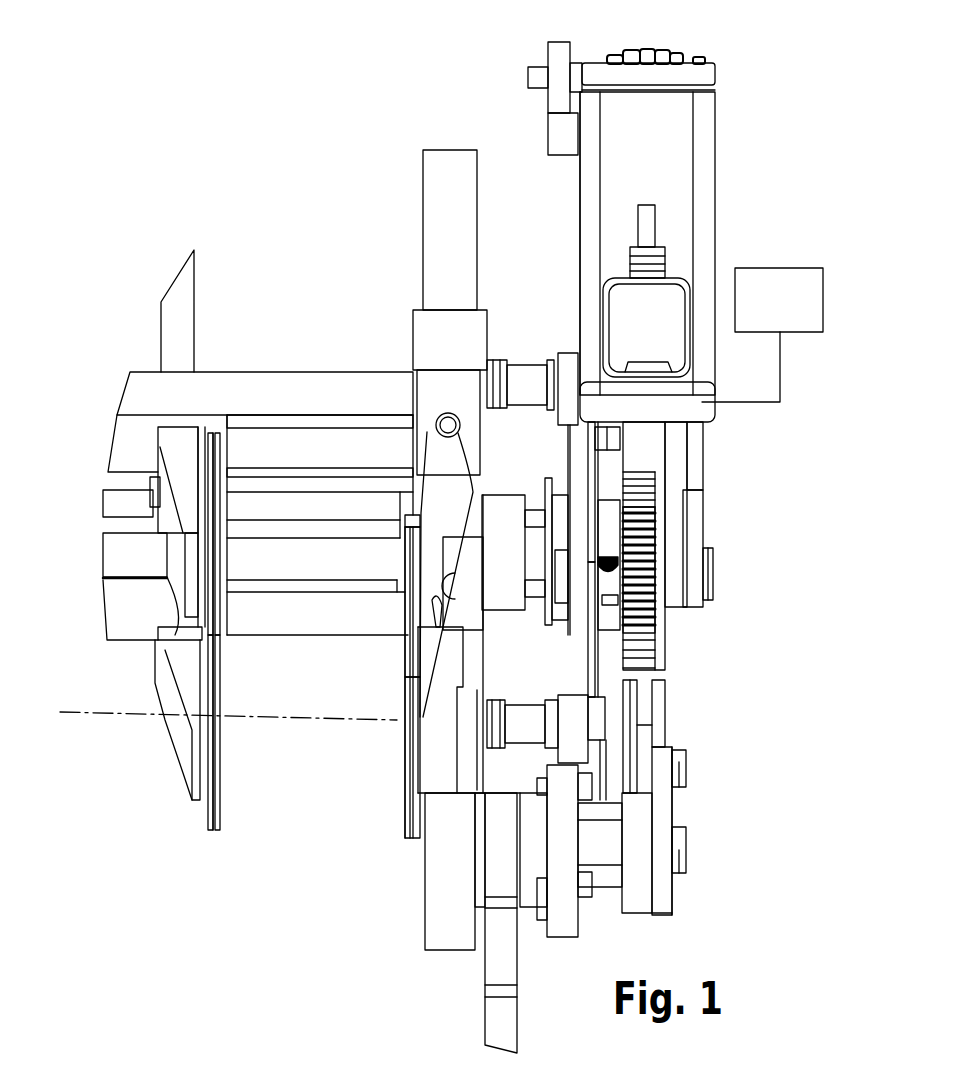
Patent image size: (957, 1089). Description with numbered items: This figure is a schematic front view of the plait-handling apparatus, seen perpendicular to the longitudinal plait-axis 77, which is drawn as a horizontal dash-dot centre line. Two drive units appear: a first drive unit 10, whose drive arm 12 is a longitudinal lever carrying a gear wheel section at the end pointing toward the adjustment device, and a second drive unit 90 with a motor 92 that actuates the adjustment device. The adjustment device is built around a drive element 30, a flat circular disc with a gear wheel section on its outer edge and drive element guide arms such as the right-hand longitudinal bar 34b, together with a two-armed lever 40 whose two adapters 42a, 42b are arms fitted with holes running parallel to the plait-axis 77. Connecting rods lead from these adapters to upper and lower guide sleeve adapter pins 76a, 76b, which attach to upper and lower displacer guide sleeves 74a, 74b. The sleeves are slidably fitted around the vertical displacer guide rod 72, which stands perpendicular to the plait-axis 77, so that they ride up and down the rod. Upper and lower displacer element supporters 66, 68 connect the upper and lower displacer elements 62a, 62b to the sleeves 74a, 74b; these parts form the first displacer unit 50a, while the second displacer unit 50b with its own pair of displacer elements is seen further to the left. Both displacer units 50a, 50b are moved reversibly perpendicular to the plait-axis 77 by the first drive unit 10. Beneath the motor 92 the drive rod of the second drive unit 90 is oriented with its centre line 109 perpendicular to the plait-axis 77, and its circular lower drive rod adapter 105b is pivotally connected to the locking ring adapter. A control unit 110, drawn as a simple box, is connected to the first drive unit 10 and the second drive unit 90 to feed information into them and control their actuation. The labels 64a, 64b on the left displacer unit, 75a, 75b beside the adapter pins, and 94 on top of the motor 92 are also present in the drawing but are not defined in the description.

The first drive unit 10 is at (693, 729).
The drive arm 12 is at (663, 807).
The drive element 30 is at (650, 528).
The right-hand longitudinal bar 34b is at (655, 462).
The two-armed lever 40 is at (610, 537).
The adapter 42a is at (585, 452).
The adapter 42b is at (583, 665).
The first displacer unit 50a is at (390, 830).
The second displacer unit 50b is at (237, 823).
The upper displacer element 62a is at (403, 597).
The lower displacer element 62b is at (405, 793).
The first gripper plate 64a is at (222, 587).
The second gripper plate 64b is at (221, 773).
The upper displacer element supporter 66 is at (443, 460).
The lower displacer element supporter 68 is at (440, 665).
The displacer guide rod 72 is at (438, 935).
The upper displacer guide sleeve 74a is at (416, 333).
The lower displacer guide sleeve 74b is at (462, 770).
The upper collar 75a is at (496, 365).
The lower collar 75b is at (497, 712).
The upper guide sleeve adapter pin 76a is at (530, 378).
The lower guide sleeve adapter pin 76b is at (525, 735).
The longitudinal plait-axis 77 is at (67, 712).
The second drive unit 90 is at (737, 91).
The motor 92 is at (675, 160).
The cable connector 94 is at (662, 52).
The lower drive rod adapter 105b is at (718, 598).
The centre line 109 is at (702, 456).
The control unit 110 is at (782, 268).